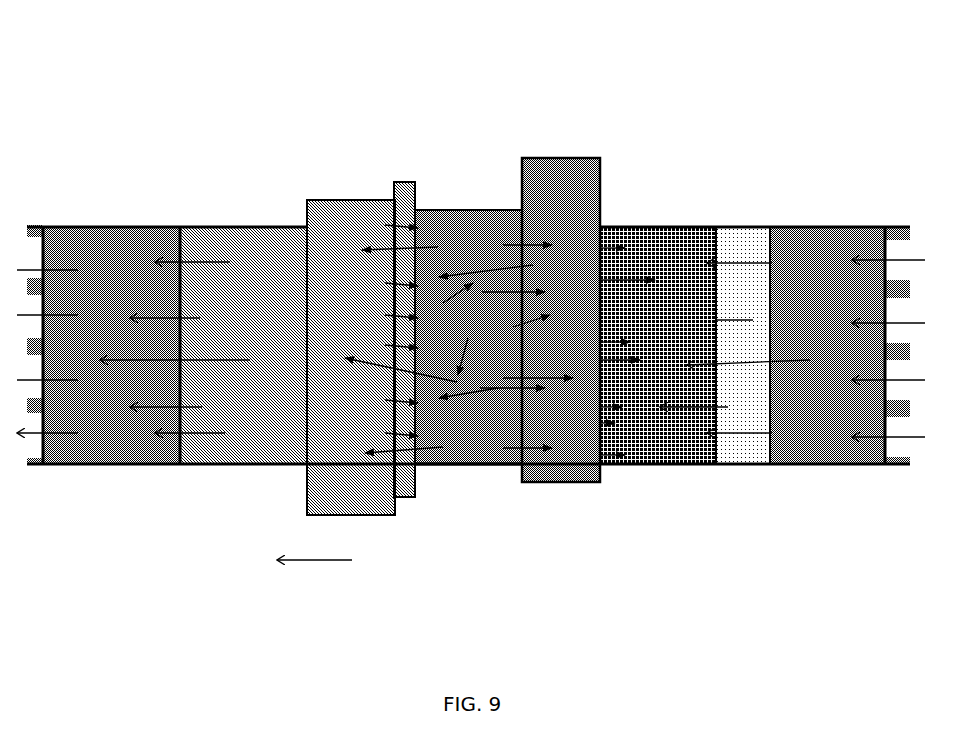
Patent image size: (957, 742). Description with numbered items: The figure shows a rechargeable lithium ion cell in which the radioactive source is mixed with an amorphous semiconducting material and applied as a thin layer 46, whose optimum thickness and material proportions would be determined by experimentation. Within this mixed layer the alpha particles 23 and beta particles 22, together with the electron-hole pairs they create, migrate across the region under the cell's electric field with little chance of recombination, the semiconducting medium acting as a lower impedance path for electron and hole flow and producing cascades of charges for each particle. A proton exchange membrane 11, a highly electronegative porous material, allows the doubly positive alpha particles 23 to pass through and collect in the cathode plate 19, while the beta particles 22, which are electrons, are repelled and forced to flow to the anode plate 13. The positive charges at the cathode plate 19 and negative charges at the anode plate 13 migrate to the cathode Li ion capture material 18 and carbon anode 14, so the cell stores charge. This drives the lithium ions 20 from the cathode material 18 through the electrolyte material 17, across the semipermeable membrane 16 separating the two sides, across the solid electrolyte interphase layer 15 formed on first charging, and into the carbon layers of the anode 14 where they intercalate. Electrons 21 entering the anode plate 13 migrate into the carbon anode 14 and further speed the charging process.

The proton exchange membrane 11 is at (402, 177).
The anode plate 13 is at (578, 485).
The carbon anode 14 is at (685, 472).
The solid electrolyte interphase layer 15 is at (748, 475).
The semipermeable membrane 16 is at (917, 475).
The electrolyte material 17 is at (80, 472).
The Li ion capture material 18 is at (228, 218).
The cathode plate 19 is at (350, 195).
The lithium ions 20 is at (687, 243).
The electrons 21 is at (570, 213).
The beta particles 22 is at (508, 222).
The alpha particles 23 is at (445, 226).
The layer 46 is at (458, 468).